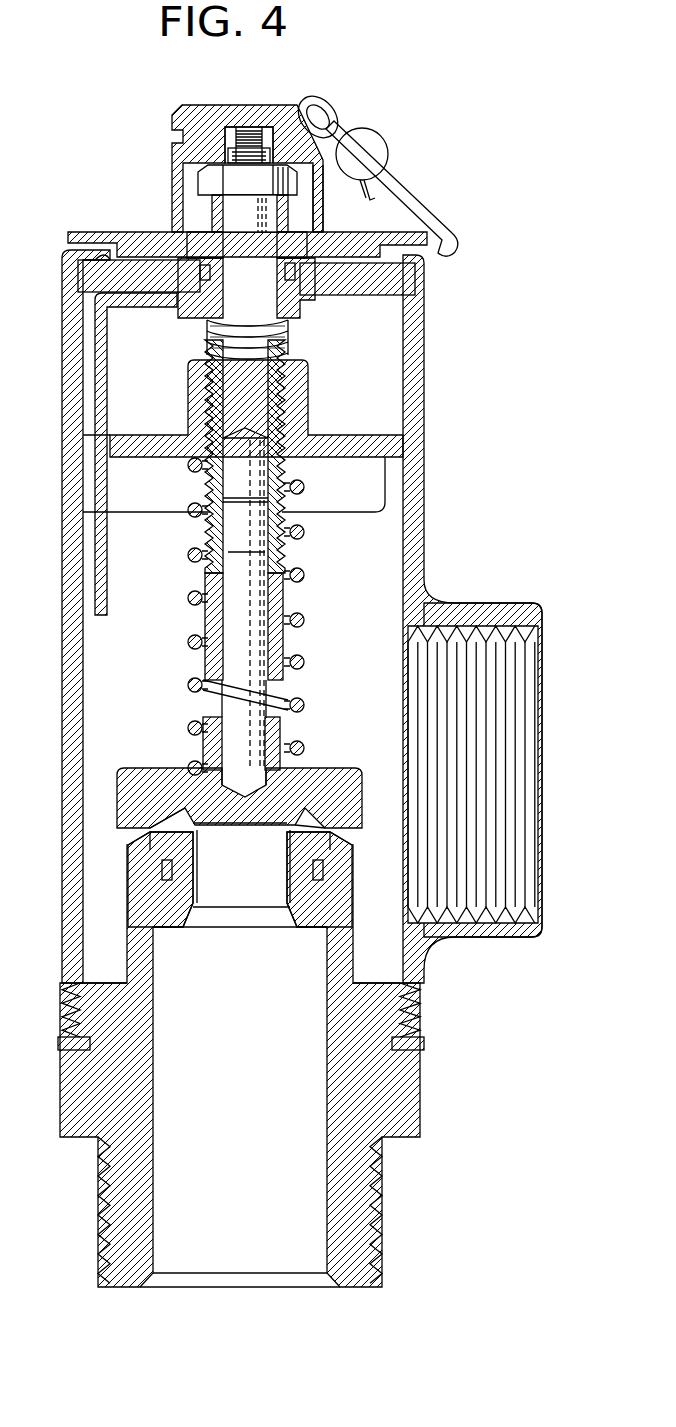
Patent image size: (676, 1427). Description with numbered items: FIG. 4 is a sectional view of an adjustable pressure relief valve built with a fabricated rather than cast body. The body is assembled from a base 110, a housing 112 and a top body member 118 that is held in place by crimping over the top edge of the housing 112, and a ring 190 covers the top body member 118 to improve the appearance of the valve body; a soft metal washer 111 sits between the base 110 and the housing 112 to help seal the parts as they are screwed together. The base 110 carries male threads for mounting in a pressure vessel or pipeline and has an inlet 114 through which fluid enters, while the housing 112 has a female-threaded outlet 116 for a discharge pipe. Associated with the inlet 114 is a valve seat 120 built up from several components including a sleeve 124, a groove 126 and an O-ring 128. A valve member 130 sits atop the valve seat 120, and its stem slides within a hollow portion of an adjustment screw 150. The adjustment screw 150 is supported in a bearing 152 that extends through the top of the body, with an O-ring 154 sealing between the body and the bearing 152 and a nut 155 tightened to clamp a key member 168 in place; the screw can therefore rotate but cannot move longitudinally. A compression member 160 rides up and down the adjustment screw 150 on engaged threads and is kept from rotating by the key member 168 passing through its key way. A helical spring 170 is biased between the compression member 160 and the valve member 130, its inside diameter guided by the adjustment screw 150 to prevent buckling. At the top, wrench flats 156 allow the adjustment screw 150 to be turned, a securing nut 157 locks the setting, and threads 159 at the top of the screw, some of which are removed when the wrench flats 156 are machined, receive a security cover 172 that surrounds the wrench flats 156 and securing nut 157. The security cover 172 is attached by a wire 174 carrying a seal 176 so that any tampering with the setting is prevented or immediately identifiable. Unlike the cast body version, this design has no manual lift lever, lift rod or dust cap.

The base 110 is at (388, 1215).
The soft metal washer 111 is at (425, 1045).
The housing 112 is at (432, 950).
The inlet 114 is at (305, 1282).
The outlet 116 is at (473, 670).
The top body member 118 is at (85, 275).
The valve seat 120 is at (280, 840).
The sleeve 124 is at (190, 925).
The groove 126 is at (340, 838).
The O-ring 128 is at (165, 860).
The valve member 130 is at (318, 766).
The adjustment screw 150 is at (198, 660).
The bearing 152 is at (318, 330).
The O-ring 154 is at (296, 268).
The nut 155 is at (324, 217).
The wrench flats 156 is at (231, 126).
The securing nut 157 is at (200, 185).
The threads 159 is at (250, 127).
The compression member 160 is at (353, 462).
The key member 168 is at (108, 603).
The helical spring 170 is at (307, 620).
The security cover 172 is at (177, 142).
The wire 174 is at (420, 195).
The seal 176 is at (385, 145).
The ring 190 is at (90, 232).